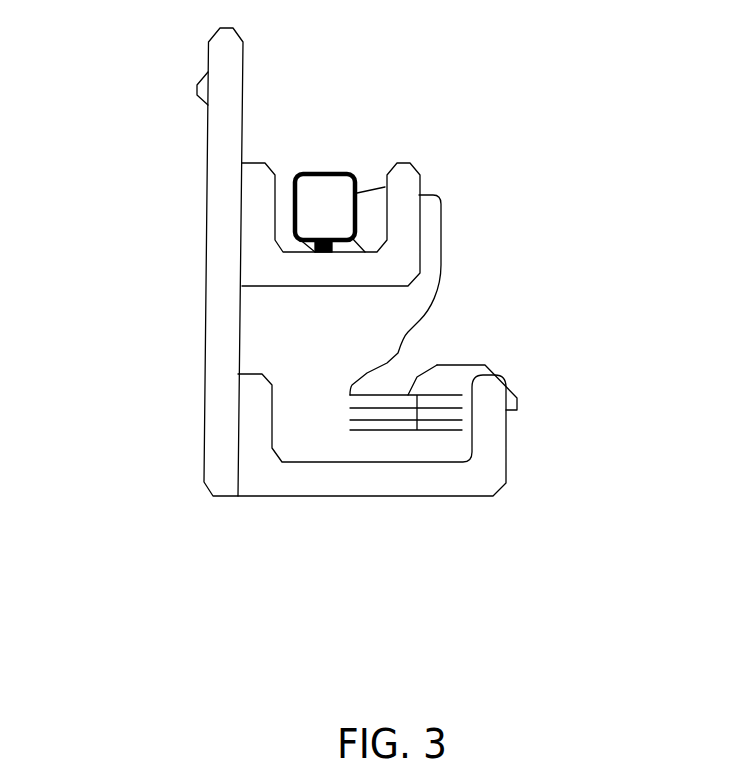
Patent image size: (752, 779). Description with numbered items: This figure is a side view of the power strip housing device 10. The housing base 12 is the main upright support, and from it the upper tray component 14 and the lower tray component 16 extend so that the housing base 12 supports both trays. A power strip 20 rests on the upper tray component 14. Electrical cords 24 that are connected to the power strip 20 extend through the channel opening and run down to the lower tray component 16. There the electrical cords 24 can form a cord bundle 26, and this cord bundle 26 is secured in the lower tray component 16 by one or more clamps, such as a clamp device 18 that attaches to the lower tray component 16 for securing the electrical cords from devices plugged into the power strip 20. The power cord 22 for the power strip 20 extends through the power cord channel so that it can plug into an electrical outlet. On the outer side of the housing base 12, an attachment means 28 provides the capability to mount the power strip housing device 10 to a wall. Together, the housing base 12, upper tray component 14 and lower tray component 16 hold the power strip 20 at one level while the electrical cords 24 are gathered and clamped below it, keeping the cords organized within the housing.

The mounting assembly 10 is at (162, 273).
The housing base 12 is at (207, 316).
The upper tray component 14 is at (419, 231).
The lower tray component 16 is at (506, 432).
The clamp device 18 is at (485, 365).
The power strip 20 is at (330, 172).
The power cord 22 is at (328, 252).
The electrical cords 24 is at (441, 255).
The cord bundle 26 is at (437, 430).
The attachment means 28 is at (197, 95).